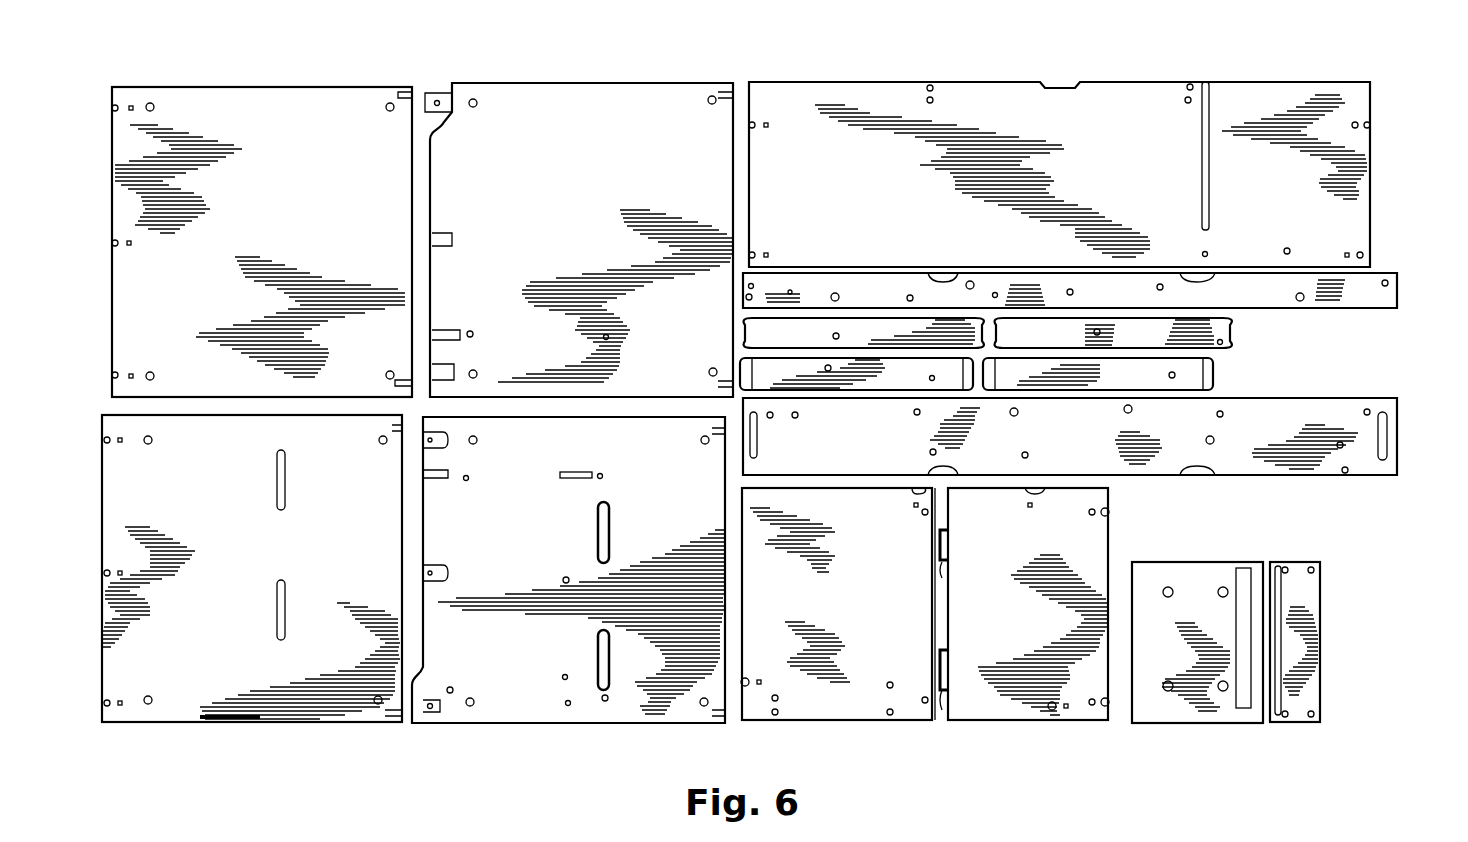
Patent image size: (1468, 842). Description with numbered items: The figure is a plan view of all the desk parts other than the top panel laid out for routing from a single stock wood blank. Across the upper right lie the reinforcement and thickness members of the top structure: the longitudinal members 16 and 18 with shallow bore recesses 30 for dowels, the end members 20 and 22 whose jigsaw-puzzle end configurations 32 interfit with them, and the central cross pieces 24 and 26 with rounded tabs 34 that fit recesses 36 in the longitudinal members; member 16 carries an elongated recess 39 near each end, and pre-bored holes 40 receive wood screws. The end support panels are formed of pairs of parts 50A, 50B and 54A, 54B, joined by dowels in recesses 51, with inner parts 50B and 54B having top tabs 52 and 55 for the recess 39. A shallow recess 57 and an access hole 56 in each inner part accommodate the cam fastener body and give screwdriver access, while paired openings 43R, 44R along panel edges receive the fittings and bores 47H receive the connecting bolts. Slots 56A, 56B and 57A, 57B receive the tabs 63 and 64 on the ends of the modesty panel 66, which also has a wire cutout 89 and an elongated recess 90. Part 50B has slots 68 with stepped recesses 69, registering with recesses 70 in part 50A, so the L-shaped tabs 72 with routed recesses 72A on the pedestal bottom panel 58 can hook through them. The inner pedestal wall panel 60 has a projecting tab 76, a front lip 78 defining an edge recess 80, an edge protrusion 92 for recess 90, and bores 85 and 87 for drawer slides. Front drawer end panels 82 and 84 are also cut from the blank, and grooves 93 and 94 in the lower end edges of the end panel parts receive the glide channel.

The longitudinal reinforcing member 16 is at (1268, 455).
The longitudinal reinforcing member 18 is at (1070, 290).
The end reinforcing member 20 is at (895, 335).
The end reinforcing member 22 is at (1113, 333).
The central cross piece 24 is at (856, 374).
The central cross piece 26 is at (1098, 374).
The shallow bore recess 30 is at (838, 294).
The jigsaw puzzle end configuration 32 is at (997, 330).
The rounded tab 34 is at (1215, 375).
The recess 36 is at (1208, 273).
The elongated recess 39 is at (758, 440).
The pre-bored hole 40 is at (910, 295).
The fitting recess 43R is at (130, 243).
The fitting recess 44R is at (128, 248).
The bolt hole 47H is at (474, 334).
The outer pedestal end panel part 50A is at (252, 698).
The inner pedestal end panel part 50B is at (543, 713).
The dowel recess 51 is at (152, 104).
The top tab 52 is at (426, 676).
The outer free end panel part 54A is at (283, 95).
The inner free end panel part 54B is at (608, 97).
The top tab 55 is at (446, 128).
The access hole 56 is at (437, 100).
The slot 56A is at (446, 480).
The slot 56B is at (575, 472).
The shallow recess 57 is at (470, 103).
The slot 57A is at (450, 332).
The slot 57B is at (592, 334).
The pedestal bottom panel 58 is at (1047, 705).
The inner pedestal wall panel 60 is at (845, 700).
The tab 63 is at (752, 82).
The tab 64 is at (760, 235).
The modesty panel 66 is at (1059, 174).
The slot 68 is at (597, 528).
The stepped recess 69 is at (610, 535).
The recess 70 is at (285, 590).
The tab 72 is at (945, 572).
The recess 72A is at (950, 545).
The projecting tab portion 76 is at (746, 590).
The outer lip 78 is at (895, 722).
The front edge recess 80 is at (805, 722).
The front drawer end panel 82 is at (1295, 710).
The front drawer end panel 84 is at (1180, 710).
The drawer slide bore 85 is at (451, 687).
The drawer slide bore 87 is at (566, 578).
The cutout 89 is at (1056, 86).
The elongated shallow recess 90 is at (1210, 105).
The edge protrusion 92 is at (848, 489).
The groove 93 is at (404, 92).
The groove 94 is at (720, 92).